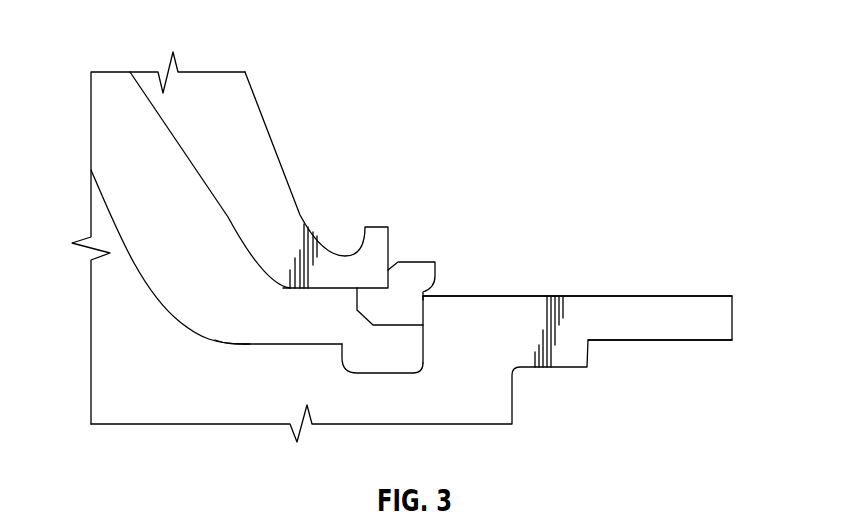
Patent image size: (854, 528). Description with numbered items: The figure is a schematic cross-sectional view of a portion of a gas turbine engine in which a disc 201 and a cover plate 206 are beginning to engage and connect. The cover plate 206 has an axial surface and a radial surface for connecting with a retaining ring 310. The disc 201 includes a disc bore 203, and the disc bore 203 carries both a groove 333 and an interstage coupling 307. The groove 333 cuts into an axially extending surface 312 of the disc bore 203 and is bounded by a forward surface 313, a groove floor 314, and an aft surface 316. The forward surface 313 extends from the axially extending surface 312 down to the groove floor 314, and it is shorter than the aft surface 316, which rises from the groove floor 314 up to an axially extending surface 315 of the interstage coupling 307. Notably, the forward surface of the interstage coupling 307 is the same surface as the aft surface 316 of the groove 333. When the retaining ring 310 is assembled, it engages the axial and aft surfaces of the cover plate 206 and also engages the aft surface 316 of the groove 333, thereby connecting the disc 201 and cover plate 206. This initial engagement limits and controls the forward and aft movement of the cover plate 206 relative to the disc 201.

The disc 201 is at (115, 288).
The disc bore 203 is at (186, 410).
The cover plate 206 is at (248, 137).
The interstage coupling 307 is at (572, 328).
The retaining ring 310 is at (437, 271).
The axially extending surface 312 is at (252, 346).
The forward surface 313 is at (340, 352).
The groove floor 314 is at (385, 373).
The axially extending surface 315 is at (583, 295).
The aft surface 316 is at (423, 338).
The groove 333 is at (390, 350).